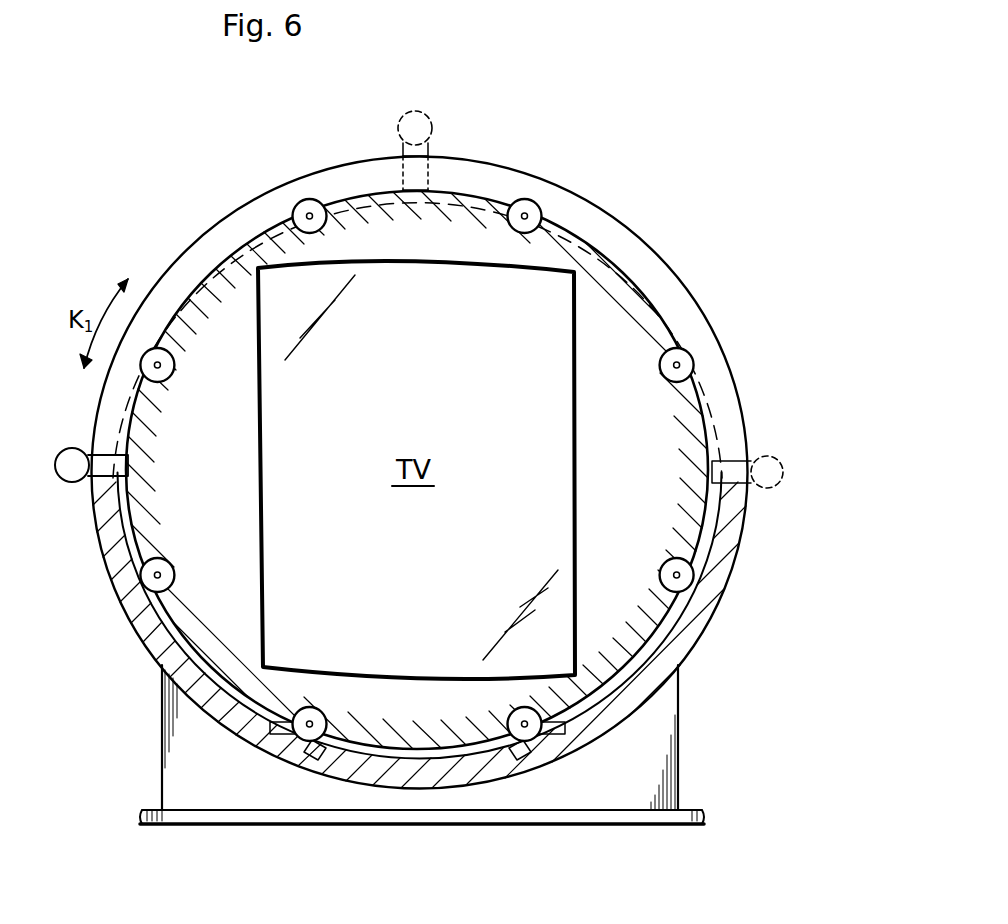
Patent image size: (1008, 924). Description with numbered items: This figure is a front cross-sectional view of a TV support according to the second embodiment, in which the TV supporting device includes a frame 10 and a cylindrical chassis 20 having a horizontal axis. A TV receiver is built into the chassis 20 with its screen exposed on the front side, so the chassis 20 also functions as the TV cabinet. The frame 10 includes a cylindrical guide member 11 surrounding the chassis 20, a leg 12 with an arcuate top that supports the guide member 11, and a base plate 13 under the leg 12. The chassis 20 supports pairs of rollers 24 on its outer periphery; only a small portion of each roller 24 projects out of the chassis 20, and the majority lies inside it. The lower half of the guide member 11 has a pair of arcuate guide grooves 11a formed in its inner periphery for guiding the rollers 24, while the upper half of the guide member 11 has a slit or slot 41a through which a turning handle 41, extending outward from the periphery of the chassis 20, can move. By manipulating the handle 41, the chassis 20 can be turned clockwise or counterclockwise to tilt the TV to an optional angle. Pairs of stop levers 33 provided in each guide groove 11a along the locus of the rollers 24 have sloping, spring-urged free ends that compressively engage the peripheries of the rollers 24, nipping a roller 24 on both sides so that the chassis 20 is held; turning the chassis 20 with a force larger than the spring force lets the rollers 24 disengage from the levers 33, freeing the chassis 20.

The frame 10 is at (415, 826).
The guide member 11 is at (690, 634).
The arcuate guide groove 11a is at (434, 748).
The leg 12 is at (664, 746).
The base plate 13 is at (620, 828).
The cylindrical chassis 20 is at (222, 248).
The roller 24 is at (328, 218).
The stop lever 33 is at (566, 748).
The turning handle 41 is at (418, 112).
The slit or slot 41a is at (712, 354).